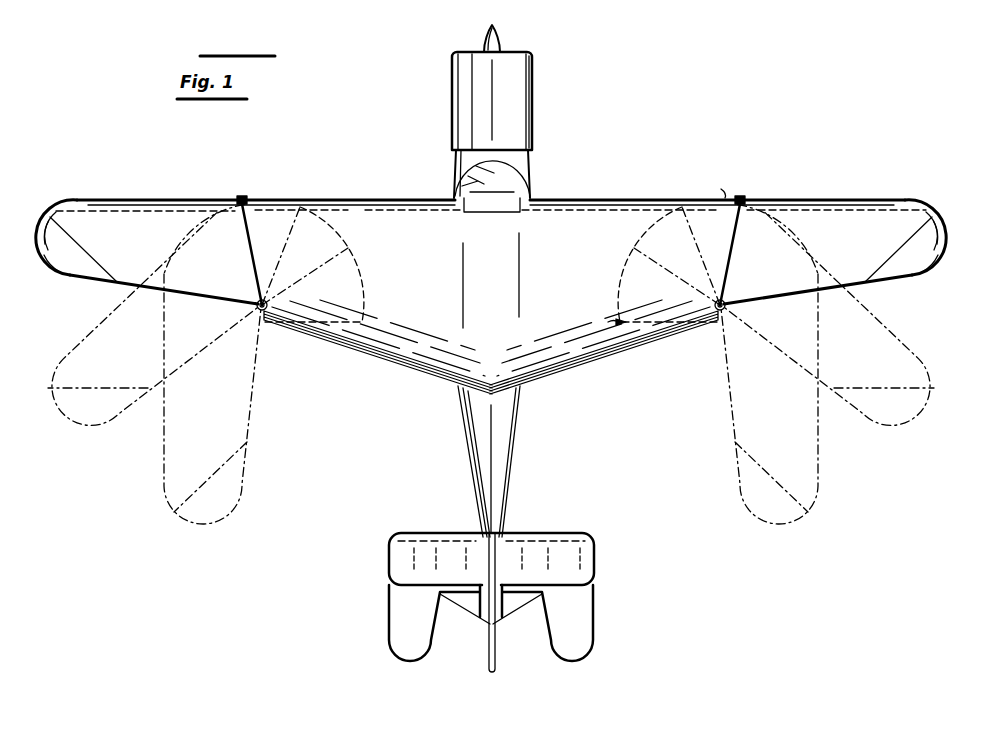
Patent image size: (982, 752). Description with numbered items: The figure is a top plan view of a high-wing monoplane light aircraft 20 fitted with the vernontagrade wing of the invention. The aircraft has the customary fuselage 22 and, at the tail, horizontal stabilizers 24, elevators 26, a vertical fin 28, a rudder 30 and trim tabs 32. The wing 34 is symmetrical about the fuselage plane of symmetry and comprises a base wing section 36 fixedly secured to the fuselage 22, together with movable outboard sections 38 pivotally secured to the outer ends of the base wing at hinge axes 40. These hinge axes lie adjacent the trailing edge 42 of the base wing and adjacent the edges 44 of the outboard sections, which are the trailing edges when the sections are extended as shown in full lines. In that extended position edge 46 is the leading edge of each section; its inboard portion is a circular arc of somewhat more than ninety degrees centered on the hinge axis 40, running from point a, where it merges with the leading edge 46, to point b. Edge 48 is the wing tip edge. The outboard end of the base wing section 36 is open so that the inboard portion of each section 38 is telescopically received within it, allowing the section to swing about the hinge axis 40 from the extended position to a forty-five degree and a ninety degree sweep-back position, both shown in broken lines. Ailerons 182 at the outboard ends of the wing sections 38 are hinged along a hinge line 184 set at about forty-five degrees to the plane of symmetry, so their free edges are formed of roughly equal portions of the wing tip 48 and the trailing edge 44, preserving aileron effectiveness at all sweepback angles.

The light aircraft 20 is at (436, 396).
The fuselage 22 is at (517, 407).
The horizontal stabilizers 24 is at (398, 557).
The elevators 26 is at (400, 610).
The vertical fin 28 is at (472, 531).
The rudder 30 is at (488, 655).
The trim tabs 32 is at (460, 610).
The wing 34 is at (593, 196).
The base wing section 36 is at (493, 266).
The movable outboard wing sections 38 is at (118, 206).
The hinge axes 40 is at (257, 305).
The trailing edge of the base wing 42 is at (345, 346).
The trailing edge of the wing section 44 is at (90, 284).
The leading edge of the wing section 46 is at (152, 199).
The wing tip edge 48 is at (41, 234).
The ailerons 182 is at (50, 254).
The hinge line 184 is at (44, 245).